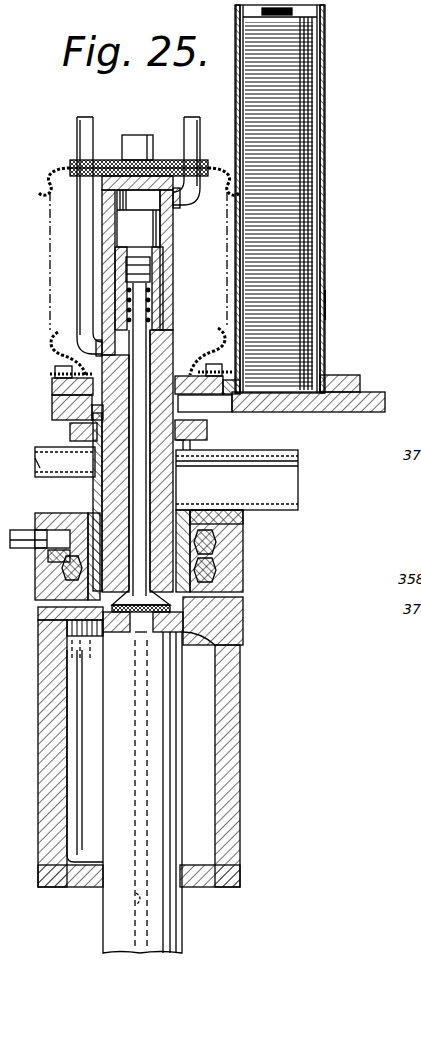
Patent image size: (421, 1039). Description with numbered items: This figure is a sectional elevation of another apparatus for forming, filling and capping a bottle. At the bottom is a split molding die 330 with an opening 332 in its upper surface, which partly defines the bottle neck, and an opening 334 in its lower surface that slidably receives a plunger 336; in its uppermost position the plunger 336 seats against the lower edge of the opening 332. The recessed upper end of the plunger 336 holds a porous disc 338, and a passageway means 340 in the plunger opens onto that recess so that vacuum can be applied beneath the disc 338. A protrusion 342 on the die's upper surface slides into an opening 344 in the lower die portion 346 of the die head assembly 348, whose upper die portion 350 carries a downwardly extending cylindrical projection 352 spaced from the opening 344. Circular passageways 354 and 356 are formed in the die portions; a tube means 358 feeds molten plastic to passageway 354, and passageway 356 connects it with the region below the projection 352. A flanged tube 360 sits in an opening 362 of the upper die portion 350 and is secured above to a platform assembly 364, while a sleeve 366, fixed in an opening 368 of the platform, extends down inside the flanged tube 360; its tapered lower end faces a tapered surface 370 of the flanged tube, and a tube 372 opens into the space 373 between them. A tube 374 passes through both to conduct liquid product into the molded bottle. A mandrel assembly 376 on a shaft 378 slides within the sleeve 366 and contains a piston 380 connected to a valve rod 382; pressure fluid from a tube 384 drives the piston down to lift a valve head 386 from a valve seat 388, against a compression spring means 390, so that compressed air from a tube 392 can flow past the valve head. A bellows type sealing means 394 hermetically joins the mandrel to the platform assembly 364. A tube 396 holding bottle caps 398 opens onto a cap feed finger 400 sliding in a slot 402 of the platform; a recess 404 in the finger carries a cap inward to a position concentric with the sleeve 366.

The molding die 330 is at (240, 737).
The opening 332 is at (232, 618).
The opening 334 is at (180, 905).
The plunger 336 is at (172, 794).
The porous disc 338 is at (182, 630).
The passageway means 340 is at (135, 904).
The protrusion 342 is at (200, 598).
The opening 344 is at (225, 590).
The lower die portion 346 is at (243, 556).
The die head assembly 348 is at (247, 543).
The upper die portion 350 is at (243, 523).
The cylindrical projection 352 is at (50, 585).
The circular passageway 354 is at (63, 513).
The circular passageway 356 is at (66, 566).
The tube means 358 is at (27, 530).
The flanged tube 360 is at (186, 441).
The opening 362 is at (95, 518).
The platform assembly 364 is at (52, 400).
The sleeve 366 is at (92, 440).
The opening 368 is at (207, 430).
The tapered surface 370 is at (66, 614).
The tube 372 is at (38, 462).
The space 373 is at (65, 462).
The tube 374 is at (298, 461).
The mandrel assembly 376 is at (160, 322).
The shaft 378 is at (150, 135).
The piston 380 is at (165, 222).
The valve rod 382 is at (148, 356).
The tube 384 is at (212, 103).
The valve head 386 is at (85, 640).
The valve seat 388 is at (140, 640).
The compression spring means 390 is at (157, 292).
The tube 392 is at (78, 259).
The bellows type sealing means 394 is at (52, 178).
The tube 396 is at (325, 220).
The bottle caps 398 is at (325, 306).
The cap feed finger 400 is at (378, 393).
The slot 402 is at (205, 403).
The recess 404 is at (334, 375).